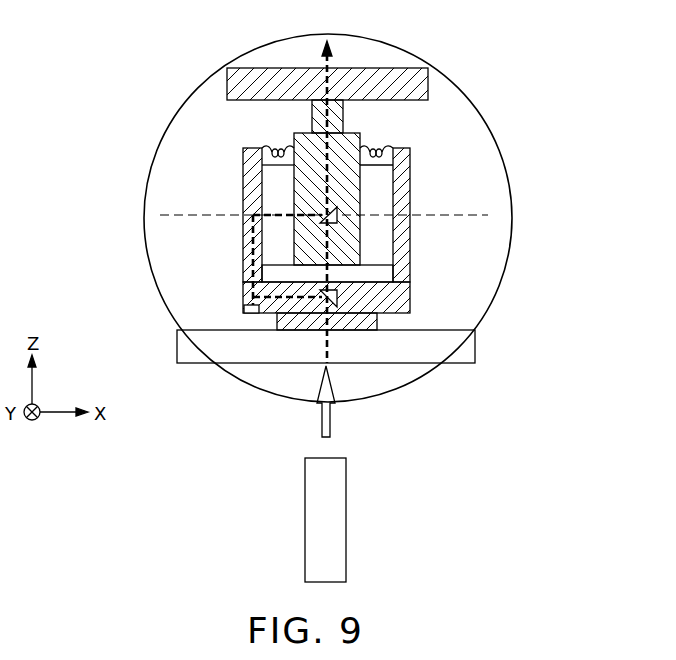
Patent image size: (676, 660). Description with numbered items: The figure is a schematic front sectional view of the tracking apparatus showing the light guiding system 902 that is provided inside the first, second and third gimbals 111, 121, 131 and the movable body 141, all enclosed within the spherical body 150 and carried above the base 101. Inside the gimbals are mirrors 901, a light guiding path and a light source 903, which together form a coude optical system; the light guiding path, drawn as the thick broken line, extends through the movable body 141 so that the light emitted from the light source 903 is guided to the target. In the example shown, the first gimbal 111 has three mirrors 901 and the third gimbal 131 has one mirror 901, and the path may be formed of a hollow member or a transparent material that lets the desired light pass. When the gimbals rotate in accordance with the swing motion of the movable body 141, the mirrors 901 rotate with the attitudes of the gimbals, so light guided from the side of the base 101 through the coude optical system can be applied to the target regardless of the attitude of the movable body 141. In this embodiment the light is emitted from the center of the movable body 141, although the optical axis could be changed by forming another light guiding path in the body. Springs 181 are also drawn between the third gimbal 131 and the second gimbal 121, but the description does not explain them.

The spherical body 150 is at (198, 82).
The movable body 141 is at (415, 72).
The third gimbal 131 is at (356, 138).
The second gimbal 121 is at (382, 239).
The spring 181 is at (268, 144).
The first gimbal 111 is at (408, 302).
The base 101 is at (418, 353).
The mirror 901 is at (250, 315).
The light guiding system 902 is at (278, 213).
The light source 903 is at (346, 522).